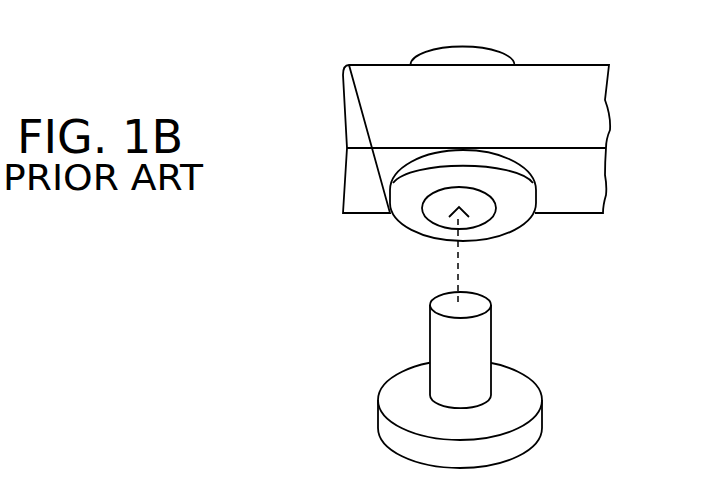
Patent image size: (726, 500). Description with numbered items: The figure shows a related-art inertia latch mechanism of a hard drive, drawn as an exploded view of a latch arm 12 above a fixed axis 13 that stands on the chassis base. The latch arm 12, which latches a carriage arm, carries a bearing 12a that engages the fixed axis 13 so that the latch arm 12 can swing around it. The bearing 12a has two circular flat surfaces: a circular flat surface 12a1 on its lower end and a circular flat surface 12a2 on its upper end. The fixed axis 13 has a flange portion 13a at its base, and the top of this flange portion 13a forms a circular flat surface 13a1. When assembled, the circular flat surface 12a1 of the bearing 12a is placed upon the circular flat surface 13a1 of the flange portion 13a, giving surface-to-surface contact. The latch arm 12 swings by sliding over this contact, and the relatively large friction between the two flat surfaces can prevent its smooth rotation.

The latch arm 12 is at (592, 108).
The bearing 12a is at (392, 181).
The circular flat surface 12a1 is at (512, 222).
The circular flat surface 12a2 is at (428, 50).
The fixed axis 13 is at (485, 328).
The flange portion 13a is at (506, 413).
The circular flat surface 13a1 is at (528, 393).